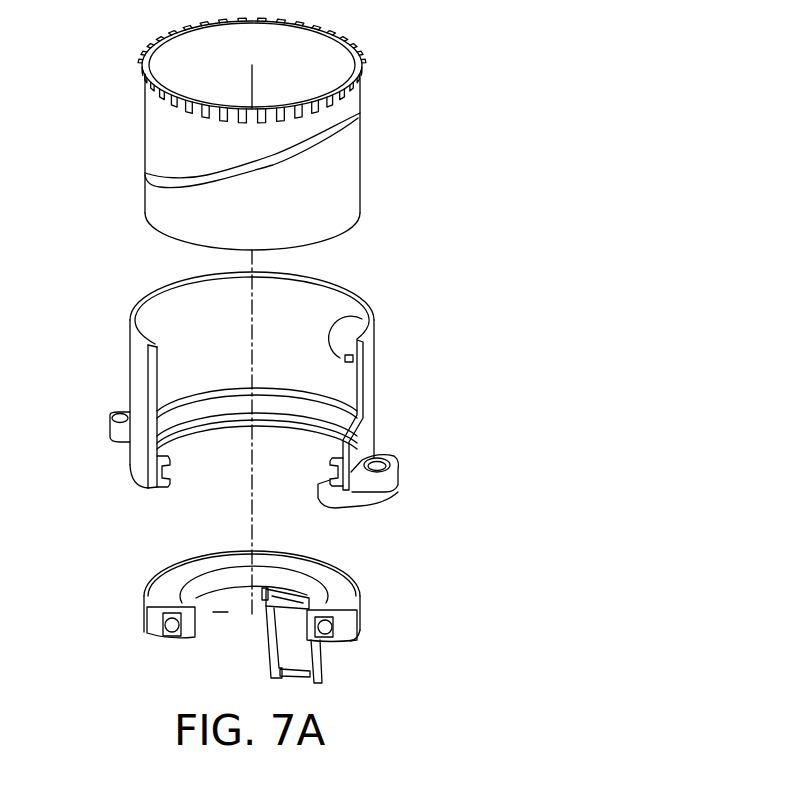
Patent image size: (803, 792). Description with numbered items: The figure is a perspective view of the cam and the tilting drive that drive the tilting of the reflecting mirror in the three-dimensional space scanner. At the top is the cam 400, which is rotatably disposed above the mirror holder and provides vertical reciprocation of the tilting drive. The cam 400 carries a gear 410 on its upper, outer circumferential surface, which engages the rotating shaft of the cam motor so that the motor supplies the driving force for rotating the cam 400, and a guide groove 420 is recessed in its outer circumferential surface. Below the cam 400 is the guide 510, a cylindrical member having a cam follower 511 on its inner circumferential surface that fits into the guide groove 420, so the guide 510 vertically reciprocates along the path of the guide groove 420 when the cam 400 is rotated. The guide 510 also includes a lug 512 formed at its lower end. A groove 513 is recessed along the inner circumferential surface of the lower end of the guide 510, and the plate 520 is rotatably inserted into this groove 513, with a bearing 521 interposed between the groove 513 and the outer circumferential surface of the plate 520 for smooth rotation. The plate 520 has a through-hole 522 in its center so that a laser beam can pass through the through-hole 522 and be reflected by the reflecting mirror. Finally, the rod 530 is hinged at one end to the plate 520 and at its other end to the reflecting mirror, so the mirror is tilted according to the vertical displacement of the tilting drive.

The cam 400 is at (350, 169).
The gear 410 is at (360, 50).
The guide groove 420 is at (148, 182).
The guide 510 is at (294, 402).
The cam follower 511 is at (347, 317).
The fastening lug 512 is at (372, 470).
The groove 513 is at (345, 509).
The plate 520 is at (303, 626).
The bearing 521 is at (357, 612).
The through-hole 522 is at (218, 612).
The rod 530 is at (317, 658).